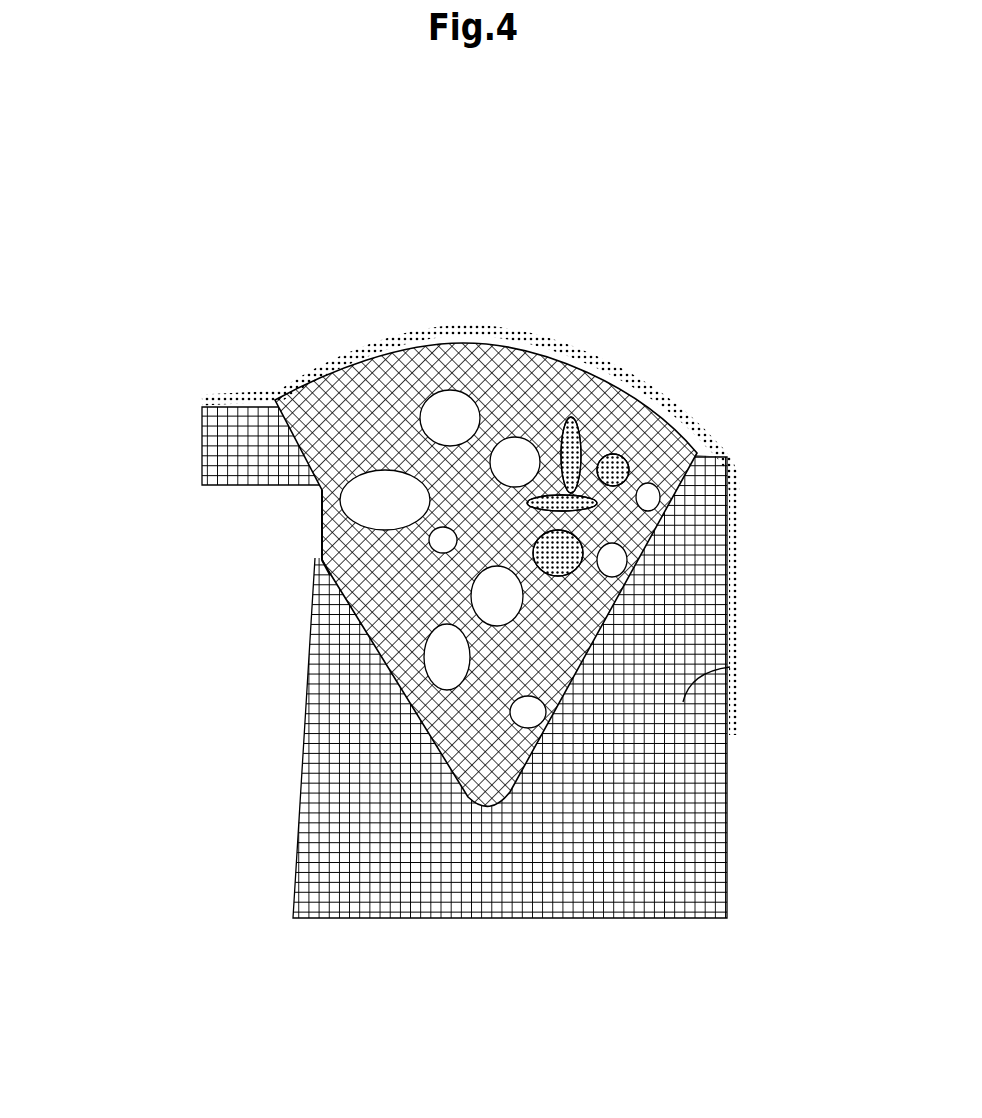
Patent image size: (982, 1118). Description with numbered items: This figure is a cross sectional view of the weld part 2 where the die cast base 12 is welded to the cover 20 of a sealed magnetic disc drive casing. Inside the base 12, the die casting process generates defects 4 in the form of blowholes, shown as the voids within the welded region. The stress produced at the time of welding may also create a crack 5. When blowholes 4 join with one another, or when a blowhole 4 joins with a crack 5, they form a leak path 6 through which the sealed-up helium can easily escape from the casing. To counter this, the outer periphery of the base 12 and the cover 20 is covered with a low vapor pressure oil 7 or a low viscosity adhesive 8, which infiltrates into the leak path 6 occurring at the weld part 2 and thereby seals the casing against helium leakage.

The weld part 2 is at (334, 395).
The defect (blowhole) 4 is at (465, 410).
The crack 5 is at (322, 528).
The leak path 6 is at (316, 585).
The low vapor pressure oil 7 is at (480, 332).
The low viscosity adhesive 8 is at (732, 473).
The base 12 is at (703, 873).
The cover 20 is at (202, 480).